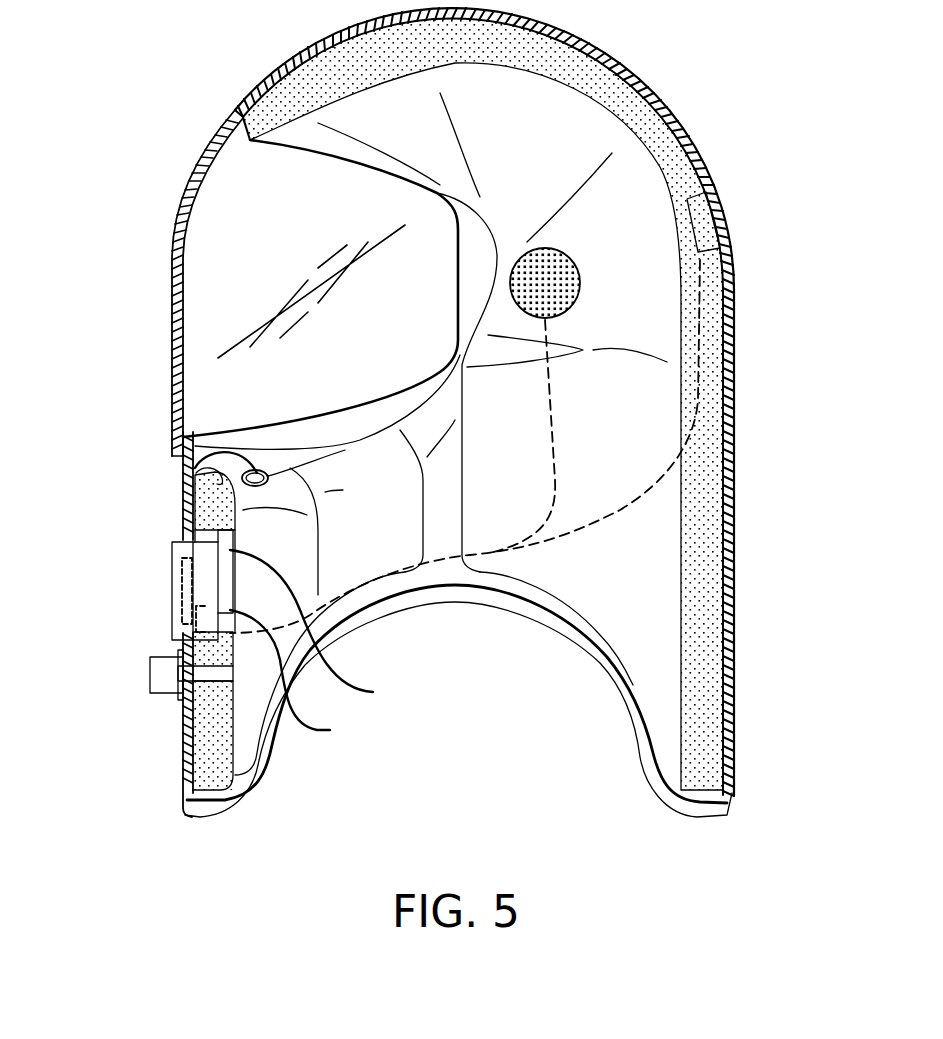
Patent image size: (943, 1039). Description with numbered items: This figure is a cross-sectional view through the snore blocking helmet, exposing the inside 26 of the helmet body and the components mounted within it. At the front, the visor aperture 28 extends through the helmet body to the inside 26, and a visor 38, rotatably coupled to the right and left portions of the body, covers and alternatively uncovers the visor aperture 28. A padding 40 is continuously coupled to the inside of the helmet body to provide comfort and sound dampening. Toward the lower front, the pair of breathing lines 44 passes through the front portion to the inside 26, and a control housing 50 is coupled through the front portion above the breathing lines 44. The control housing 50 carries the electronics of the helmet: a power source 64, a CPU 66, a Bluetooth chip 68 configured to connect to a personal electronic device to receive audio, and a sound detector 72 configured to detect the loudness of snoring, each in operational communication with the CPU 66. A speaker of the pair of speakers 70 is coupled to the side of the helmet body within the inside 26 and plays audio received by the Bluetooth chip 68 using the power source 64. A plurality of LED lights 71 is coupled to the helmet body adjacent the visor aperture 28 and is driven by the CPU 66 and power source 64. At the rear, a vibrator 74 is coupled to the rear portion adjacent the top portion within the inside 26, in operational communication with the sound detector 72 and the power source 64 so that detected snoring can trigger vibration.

The inside 26 is at (657, 523).
The visor aperture 28 is at (243, 167).
The visor 38 is at (177, 293).
The padding 40 is at (700, 632).
The pair of breathing lines 44 is at (197, 678).
The control housing 50 is at (203, 547).
The power source 64 is at (302, 678).
The CPU 66 is at (183, 582).
The Bluetooth chip 68 is at (197, 625).
The pair of speakers 70 is at (565, 262).
The plurality of LED lights 71 is at (195, 468).
The sound detector 72 is at (324, 630).
The vibrator 74 is at (705, 231).